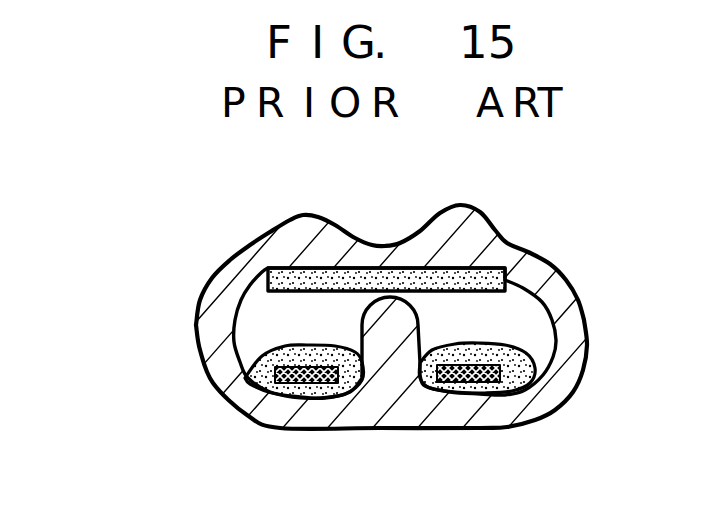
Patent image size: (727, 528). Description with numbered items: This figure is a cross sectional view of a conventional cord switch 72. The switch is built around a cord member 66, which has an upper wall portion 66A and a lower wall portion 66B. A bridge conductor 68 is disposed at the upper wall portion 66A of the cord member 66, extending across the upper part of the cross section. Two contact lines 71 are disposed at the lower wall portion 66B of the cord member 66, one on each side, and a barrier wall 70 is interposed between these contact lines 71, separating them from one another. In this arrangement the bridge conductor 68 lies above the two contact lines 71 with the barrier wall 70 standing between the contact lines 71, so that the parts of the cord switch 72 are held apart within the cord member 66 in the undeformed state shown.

The cord member 66 is at (203, 330).
The upper wall portion 66A is at (345, 247).
The lower wall portion 66B is at (310, 418).
The bridge conductor 68 is at (305, 311).
The barrier wall 70 is at (407, 327).
The contact lines 71 is at (250, 383).
The cord switch 72 is at (148, 406).